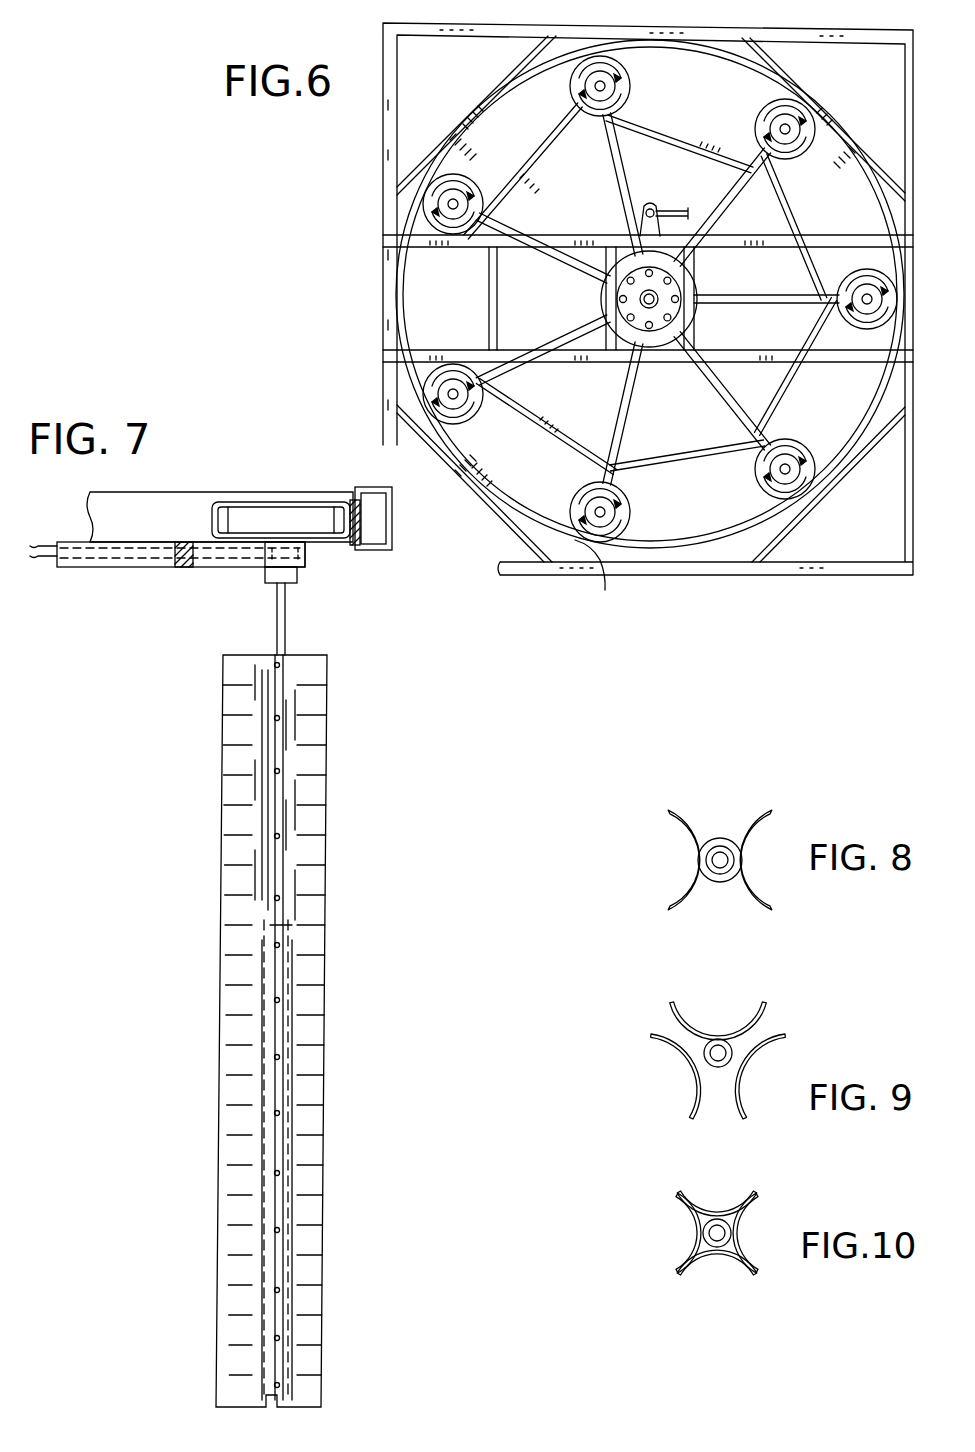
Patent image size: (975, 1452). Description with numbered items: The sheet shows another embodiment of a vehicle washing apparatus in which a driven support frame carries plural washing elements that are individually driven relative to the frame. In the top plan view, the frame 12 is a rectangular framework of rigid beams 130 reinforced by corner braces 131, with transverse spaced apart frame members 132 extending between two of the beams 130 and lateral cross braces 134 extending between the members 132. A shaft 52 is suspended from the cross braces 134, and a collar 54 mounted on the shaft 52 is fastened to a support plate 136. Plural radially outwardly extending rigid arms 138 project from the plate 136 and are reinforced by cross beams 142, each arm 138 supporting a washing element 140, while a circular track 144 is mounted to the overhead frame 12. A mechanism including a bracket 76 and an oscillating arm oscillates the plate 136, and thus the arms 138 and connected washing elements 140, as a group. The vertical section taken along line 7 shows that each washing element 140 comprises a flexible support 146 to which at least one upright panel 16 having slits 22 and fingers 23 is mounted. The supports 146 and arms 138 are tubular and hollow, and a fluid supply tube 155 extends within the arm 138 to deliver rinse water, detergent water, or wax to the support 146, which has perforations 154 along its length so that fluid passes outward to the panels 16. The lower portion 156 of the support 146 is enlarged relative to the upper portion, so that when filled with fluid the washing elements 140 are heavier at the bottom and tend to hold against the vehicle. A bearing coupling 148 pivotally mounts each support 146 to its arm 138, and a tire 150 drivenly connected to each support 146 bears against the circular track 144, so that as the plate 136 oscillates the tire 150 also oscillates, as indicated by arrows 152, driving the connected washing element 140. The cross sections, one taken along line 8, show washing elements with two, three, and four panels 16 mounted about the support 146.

In FIG. 6, the frame 12 is at (368, 222).
In FIG. 7, the panel 16 is at (216, 1277).
In FIG. 8, the panel 16 is at (680, 822).
In FIG. 9, the panel 16 is at (692, 1025).
In FIG. 10, the panel 16 is at (697, 1205).
In FIG. 7, the slits 22 is at (318, 1192).
In FIG. 7, the fingers 23 is at (318, 1118).
In FIG. 6, the shaft 52 is at (655, 295).
In FIG. 6, the collar 54 is at (657, 340).
In FIG. 6, the bracket 76 is at (650, 205).
In FIG. 6, the rigid beams 130 is at (432, 36).
In FIG. 7, the rigid beams 130 is at (375, 552).
In FIG. 6, the corner braces 131 is at (425, 128).
In FIG. 6, the frame members 132 is at (582, 235).
In FIG. 6, the cross braces 134 is at (606, 300).
In FIG. 6, the support plate 136 is at (660, 352).
In FIG. 6, the arms 138 is at (760, 185).
In FIG. 7, the arms 138 is at (100, 568).
In FIG. 6, the washing element 140 is at (758, 495).
In FIG. 7, the washing element 140 is at (278, 1031).
In FIG. 6, the cross beams 142 is at (690, 148).
In FIG. 7, the cross beams 142 is at (185, 568).
In FIG. 6, the circular track 144 is at (485, 482).
In FIG. 7, the circular track 144 is at (352, 498).
In FIG. 7, the flexible support 146 is at (275, 637).
In FIG. 8, the flexible support 146 is at (719, 884).
In FIG. 9, the flexible support 146 is at (717, 1100).
In FIG. 10, the flexible support 146 is at (708, 1262).
In FIG. 7, the bearing coupling 148 is at (290, 585).
In FIG. 6, the tire 150 is at (583, 100).
In FIG. 7, the tire 150 is at (265, 502).
In FIG. 6, the arrows 152 is at (598, 542).
In FIG. 7, the perforations 154 is at (280, 771).
In FIG. 7, the fluid supply tube 155 is at (45, 560).
In FIG. 7, the lower portion 156 is at (262, 1066).
In FIG. 8, the lower portion 156 is at (720, 838).
In FIG. 6, the section line 7— 7 is at (942, 302).
In FIG. 7, the section line 8— 8 is at (392, 845).